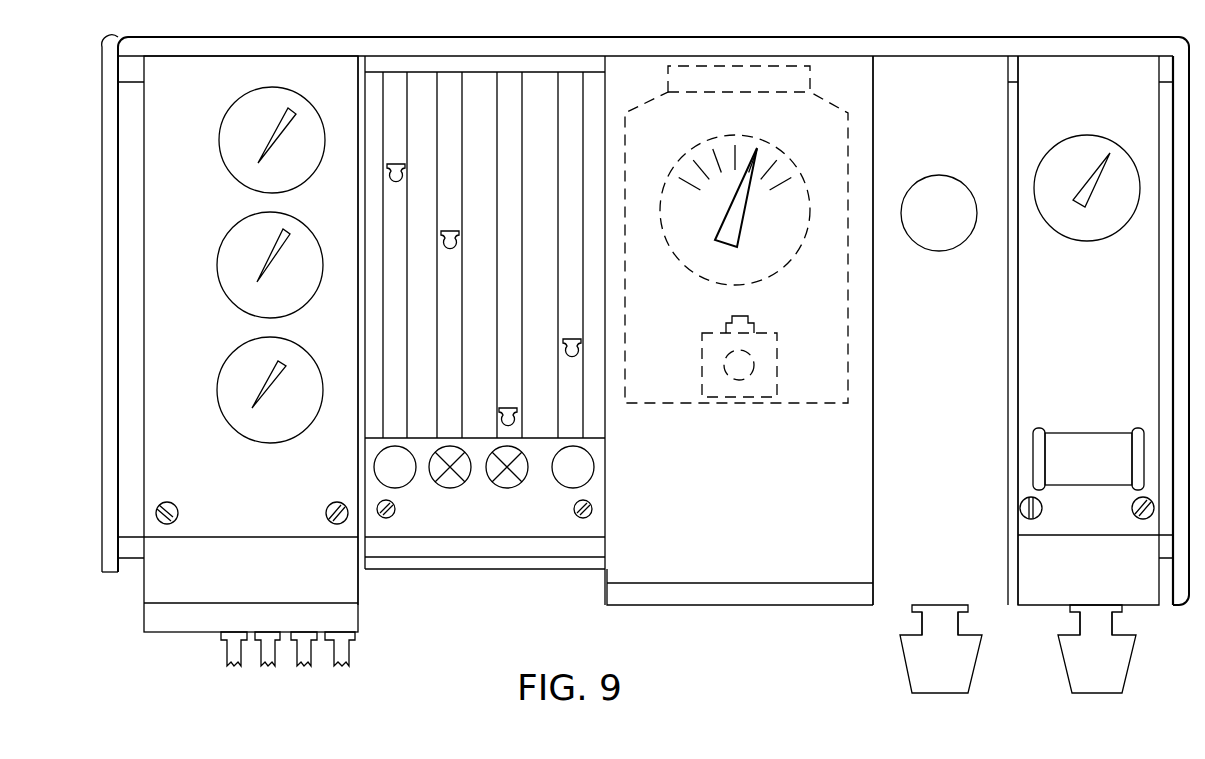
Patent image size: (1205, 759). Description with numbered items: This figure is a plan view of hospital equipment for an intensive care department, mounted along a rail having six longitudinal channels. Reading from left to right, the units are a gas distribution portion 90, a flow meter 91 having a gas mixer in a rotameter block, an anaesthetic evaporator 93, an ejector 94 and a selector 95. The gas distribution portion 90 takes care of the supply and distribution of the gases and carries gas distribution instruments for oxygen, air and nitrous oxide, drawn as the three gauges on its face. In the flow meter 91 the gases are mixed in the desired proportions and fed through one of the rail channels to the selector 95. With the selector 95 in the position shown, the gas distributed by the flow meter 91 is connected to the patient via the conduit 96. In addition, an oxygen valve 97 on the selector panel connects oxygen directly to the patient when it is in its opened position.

The gas distribution portion 90 is at (367, 584).
The flow meter 91 is at (512, 570).
The anaesthetic evaporator 93 is at (755, 474).
The ejector 94 is at (949, 316).
The selector 95 is at (1100, 311).
The conduit 96 is at (1133, 652).
The oxygen valve 97 is at (1088, 433).